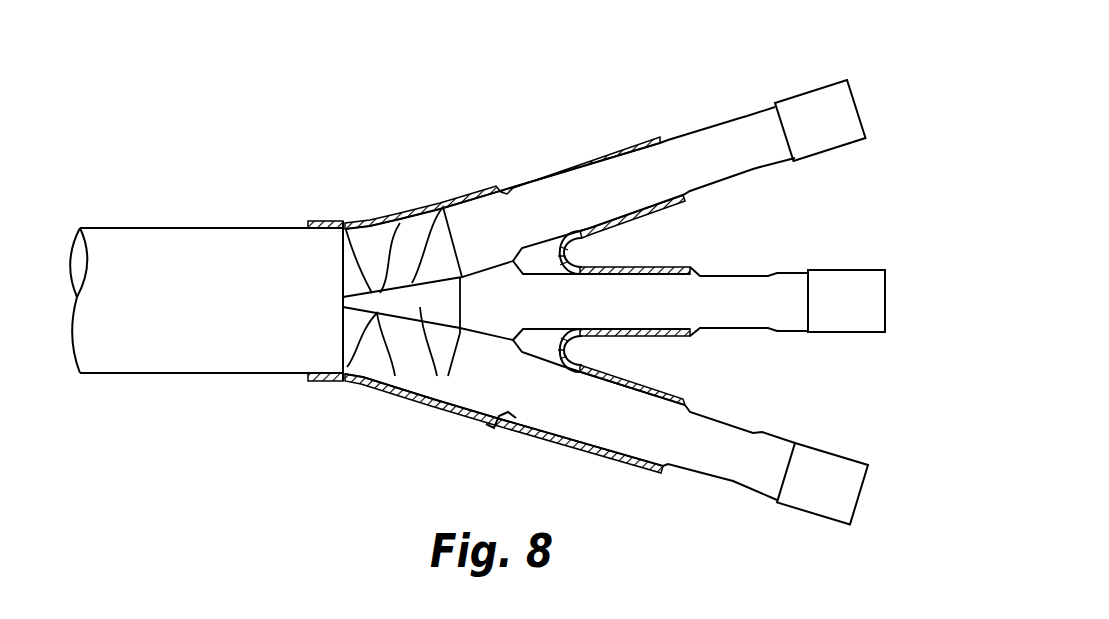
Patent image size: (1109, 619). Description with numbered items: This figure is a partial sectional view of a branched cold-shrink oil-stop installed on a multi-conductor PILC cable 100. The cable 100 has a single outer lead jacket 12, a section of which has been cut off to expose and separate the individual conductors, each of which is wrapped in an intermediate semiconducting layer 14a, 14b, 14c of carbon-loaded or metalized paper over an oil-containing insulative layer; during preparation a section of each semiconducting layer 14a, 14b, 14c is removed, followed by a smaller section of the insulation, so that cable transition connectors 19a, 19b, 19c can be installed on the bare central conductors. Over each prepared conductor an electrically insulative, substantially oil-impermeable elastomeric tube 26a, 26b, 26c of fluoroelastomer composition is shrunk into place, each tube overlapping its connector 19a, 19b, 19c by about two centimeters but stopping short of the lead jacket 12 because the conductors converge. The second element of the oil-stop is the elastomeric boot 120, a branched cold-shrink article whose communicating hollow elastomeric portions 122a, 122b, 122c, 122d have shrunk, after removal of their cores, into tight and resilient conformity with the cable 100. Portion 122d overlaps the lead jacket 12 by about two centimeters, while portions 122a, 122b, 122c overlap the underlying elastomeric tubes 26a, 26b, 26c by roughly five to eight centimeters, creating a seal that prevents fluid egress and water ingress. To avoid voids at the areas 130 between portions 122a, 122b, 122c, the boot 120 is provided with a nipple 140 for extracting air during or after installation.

The cable 100 is at (194, 174).
The lead jacket 12 is at (242, 250).
The hollow elastomeric portion 122d is at (318, 219).
The intermediate semiconducting layer 14a is at (420, 233).
The intermediate semiconducting layer 14b is at (425, 305).
The intermediate semiconducting layer 14c is at (375, 360).
The elastomeric tube 26a is at (575, 190).
The elastomeric tube 26b is at (725, 297).
The elastomeric tube 26c is at (703, 450).
The cable transition connector 19a is at (815, 108).
The cable transition connector 19b is at (846, 275).
The cable transition connector 19c is at (820, 475).
The elastomeric boot 120 is at (614, 130).
The hollow elastomeric portion 122a is at (664, 205).
The hollow elastomeric portion 122b is at (667, 340).
The hollow elastomeric portion 122c is at (564, 440).
The areas between portions 130 is at (566, 253).
The nipple 140 is at (503, 425).